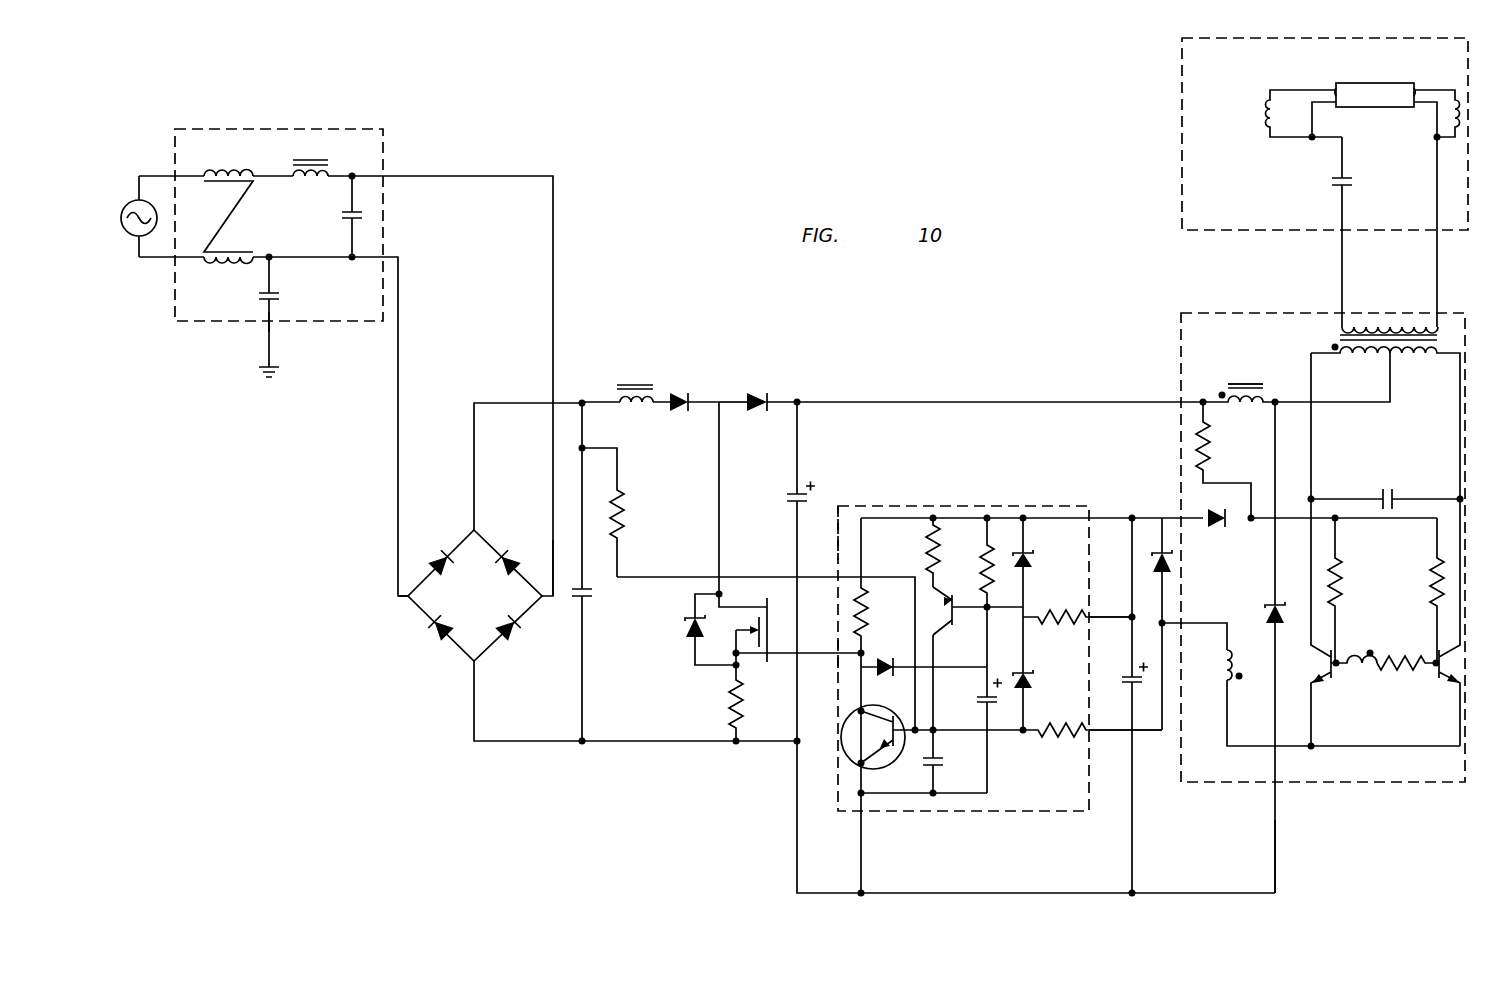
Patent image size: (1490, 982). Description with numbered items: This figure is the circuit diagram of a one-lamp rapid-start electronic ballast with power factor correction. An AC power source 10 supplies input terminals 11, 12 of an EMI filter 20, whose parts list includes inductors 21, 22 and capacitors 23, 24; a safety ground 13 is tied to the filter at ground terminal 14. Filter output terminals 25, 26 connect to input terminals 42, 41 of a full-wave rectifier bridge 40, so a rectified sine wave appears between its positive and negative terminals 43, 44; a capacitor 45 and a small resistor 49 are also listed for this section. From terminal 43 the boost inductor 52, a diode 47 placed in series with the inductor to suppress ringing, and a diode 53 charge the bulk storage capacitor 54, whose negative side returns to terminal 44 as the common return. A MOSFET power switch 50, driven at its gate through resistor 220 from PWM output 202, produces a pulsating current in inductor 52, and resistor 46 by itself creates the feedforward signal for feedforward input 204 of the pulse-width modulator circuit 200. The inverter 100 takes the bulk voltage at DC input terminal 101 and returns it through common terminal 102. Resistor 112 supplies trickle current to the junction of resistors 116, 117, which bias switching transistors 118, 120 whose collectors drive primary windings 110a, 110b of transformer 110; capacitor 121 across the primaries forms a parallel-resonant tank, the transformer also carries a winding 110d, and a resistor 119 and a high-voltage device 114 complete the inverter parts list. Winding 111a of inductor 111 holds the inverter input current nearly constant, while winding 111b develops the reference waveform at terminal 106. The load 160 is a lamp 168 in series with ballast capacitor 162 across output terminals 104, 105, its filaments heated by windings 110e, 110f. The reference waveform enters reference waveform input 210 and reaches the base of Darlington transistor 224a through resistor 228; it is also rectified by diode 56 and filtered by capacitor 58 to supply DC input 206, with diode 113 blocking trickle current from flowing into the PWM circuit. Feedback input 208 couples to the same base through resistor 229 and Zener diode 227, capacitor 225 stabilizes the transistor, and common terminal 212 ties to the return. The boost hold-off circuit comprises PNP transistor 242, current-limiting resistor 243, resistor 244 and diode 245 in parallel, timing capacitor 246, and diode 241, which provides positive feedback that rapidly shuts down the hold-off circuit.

The AC power source 10 is at (157, 218).
The input terminal 11 is at (152, 174).
The input terminal 12 is at (147, 259).
The safety ground 13 is at (268, 360).
The ground terminal 14 is at (271, 322).
The electromagnetic interference filter 20 is at (383, 150).
The inductor 21 is at (246, 176).
The inductor 22 is at (300, 160).
The capacitor 23 is at (347, 212).
The capacitor 24 is at (274, 292).
The output terminal 25 is at (383, 176).
The output terminal 26 is at (383, 257).
The full-wave rectifier bridge assembly 40 is at (388, 660).
The input terminal 41 is at (398, 594).
The input terminal 42 is at (553, 556).
The positive terminal 43 is at (505, 403).
The negative terminal 44 is at (474, 692).
The capacitor 45 is at (578, 603).
The resistor 46 is at (624, 510).
The diode 47 is at (676, 395).
The resistor 49 is at (727, 700).
The MOSFET power switch 50 is at (692, 650).
The boost inductor 52 is at (636, 385).
The diode 53 is at (752, 393).
The bulk storage capacitor 54 is at (790, 494).
The diode 56 is at (1174, 562).
The capacitor 58 is at (1128, 677).
The inverter 100 is at (1181, 340).
The DC input terminal 101 is at (1170, 400).
The common terminal 102 is at (1275, 850).
The inverter output terminal 104 is at (1340, 270).
The inverter output terminal 105 is at (1437, 272).
The reference waveform terminal 106 is at (1200, 625).
The inverter transformer 110 is at (1298, 345).
The primary winding 110a is at (1346, 358).
The primary winding 110b is at (1437, 358).
The winding 110d is at (1357, 660).
The filament winding 110e is at (1266, 110).
The filament winding 110f is at (1458, 100).
The inductor 111 is at (1220, 368).
The winding 111a is at (1278, 378).
The winding 111b is at (1222, 677).
The resistor 112 is at (1214, 445).
The diode 113 is at (1228, 528).
The Zener diode 114 is at (1270, 622).
The resistor 116 is at (1431, 590).
The resistor 117 is at (1343, 578).
The switching transistor 118 is at (1320, 683).
The resistor 119 is at (1398, 657).
The switching transistor 120 is at (1452, 683).
The capacitor 121 is at (1383, 497).
The load 160 is at (1182, 130).
The ballast capacitor 162 is at (1340, 172).
The lamp 168 is at (1345, 83).
The pulse-width modulator circuit 200 is at (838, 812).
The PWM output 202 is at (838, 655).
The feedforward input 204 is at (838, 552).
The DC input 206 is at (1148, 518).
The feedback input 208 is at (1128, 617).
The reference waveform input 210 is at (1100, 746).
The common terminal 212 is at (862, 860).
The resistor 220 is at (866, 596).
The Darlington transistor 224a is at (848, 750).
The capacitor 225 is at (938, 760).
The Zener diode 227 is at (1034, 684).
The resistor 228 is at (1056, 722).
The resistor 229 is at (1062, 624).
The diode 241 is at (866, 668).
The PNP transistor 242 is at (978, 658).
The resistor 243 is at (930, 556).
The resistor 244 is at (985, 583).
The diode 245 is at (1033, 567).
The capacitor 246 is at (980, 697).